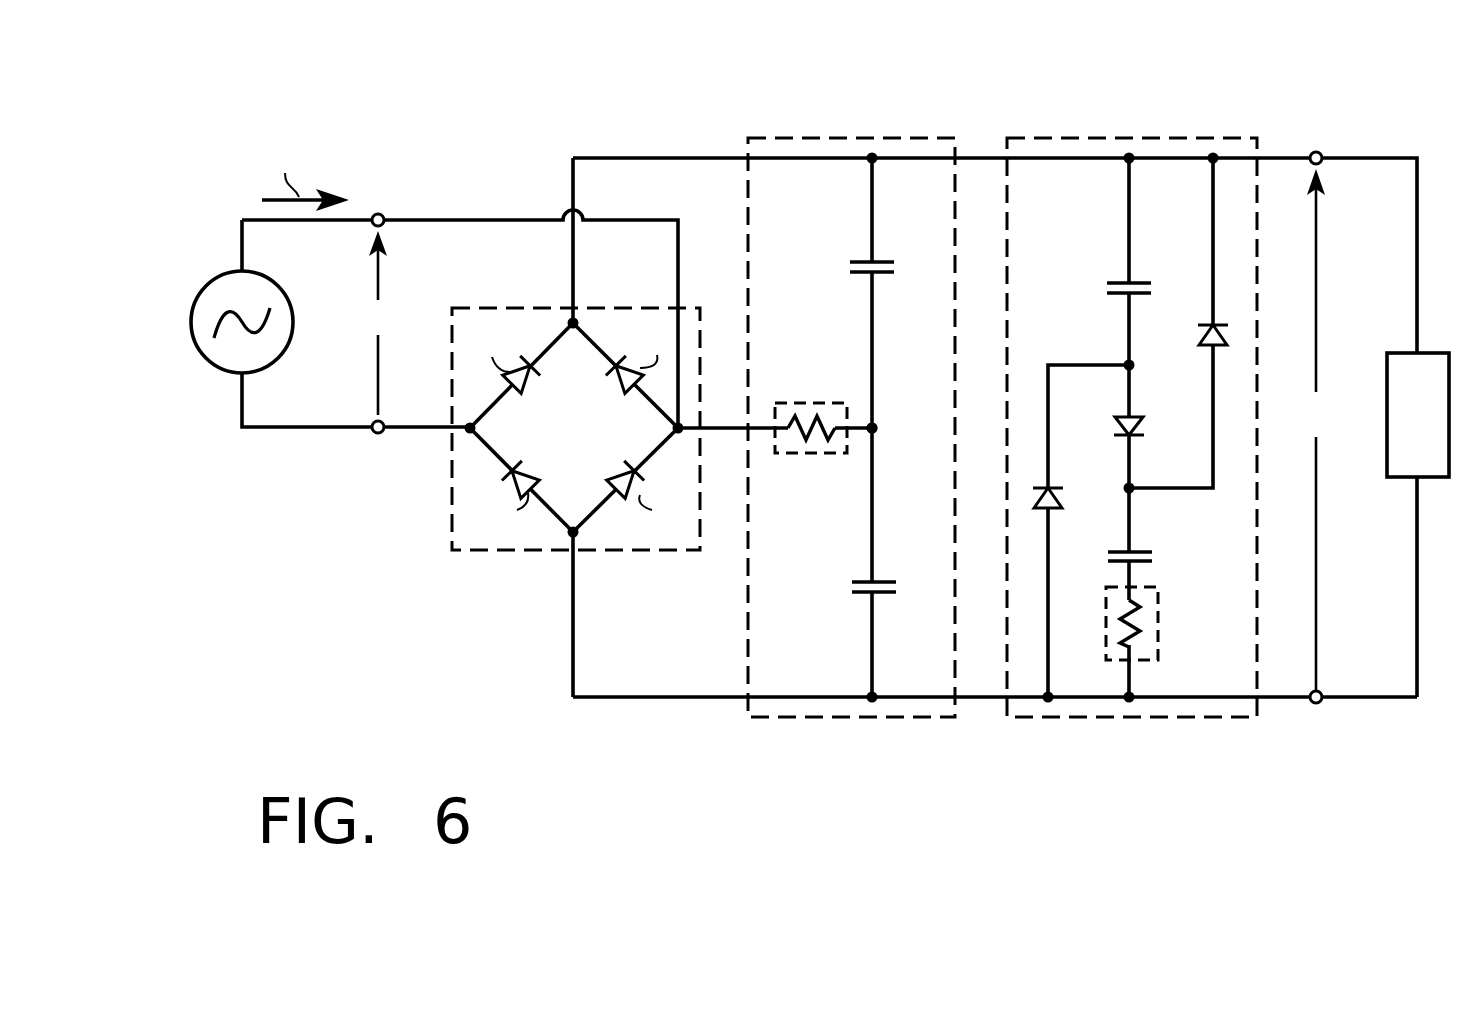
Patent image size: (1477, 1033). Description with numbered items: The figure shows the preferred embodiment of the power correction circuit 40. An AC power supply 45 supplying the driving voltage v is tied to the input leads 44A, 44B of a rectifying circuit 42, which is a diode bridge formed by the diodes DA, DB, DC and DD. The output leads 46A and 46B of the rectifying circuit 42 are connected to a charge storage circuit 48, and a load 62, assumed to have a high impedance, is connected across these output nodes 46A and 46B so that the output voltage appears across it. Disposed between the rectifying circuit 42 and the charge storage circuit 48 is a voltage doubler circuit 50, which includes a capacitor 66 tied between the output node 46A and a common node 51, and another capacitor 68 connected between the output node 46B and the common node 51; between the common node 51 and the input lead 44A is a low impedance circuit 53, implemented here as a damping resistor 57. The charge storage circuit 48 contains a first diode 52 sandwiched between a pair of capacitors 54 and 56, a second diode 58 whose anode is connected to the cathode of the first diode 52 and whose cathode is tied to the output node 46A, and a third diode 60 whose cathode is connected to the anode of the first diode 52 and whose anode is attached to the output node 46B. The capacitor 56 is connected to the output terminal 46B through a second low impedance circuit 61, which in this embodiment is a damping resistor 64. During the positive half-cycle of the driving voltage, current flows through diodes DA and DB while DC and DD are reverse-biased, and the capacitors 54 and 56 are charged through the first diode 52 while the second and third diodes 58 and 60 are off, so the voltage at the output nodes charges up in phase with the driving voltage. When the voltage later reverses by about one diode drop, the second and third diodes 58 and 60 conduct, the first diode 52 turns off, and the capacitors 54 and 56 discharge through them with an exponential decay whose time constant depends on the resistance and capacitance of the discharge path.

The power correction circuit 40 is at (570, 110).
The rectifying circuit 42 is at (530, 553).
The input lead 44A is at (379, 212).
The input lead 44B is at (379, 436).
The power supply 45 is at (190, 337).
The output lead 46A is at (1320, 150).
The output lead 46B is at (1320, 706).
The charge storage circuit 48 is at (1150, 136).
The voltage doubler circuit 50 is at (852, 137).
The common node 51 is at (885, 427).
The first diode 52 is at (1148, 428).
The low impedance circuit 53 is at (802, 380).
The capacitor 54 is at (1108, 282).
The capacitor 56 is at (1150, 551).
The damping resistor 57 is at (815, 442).
The second diode 58 is at (1205, 324).
The third diode 60 is at (1062, 503).
The low impedance circuit 61 is at (1185, 608).
The load 62 is at (1440, 478).
The damping resistor 64 is at (1138, 630).
The capacitor 66 is at (862, 258).
The capacitor 68 is at (860, 580).